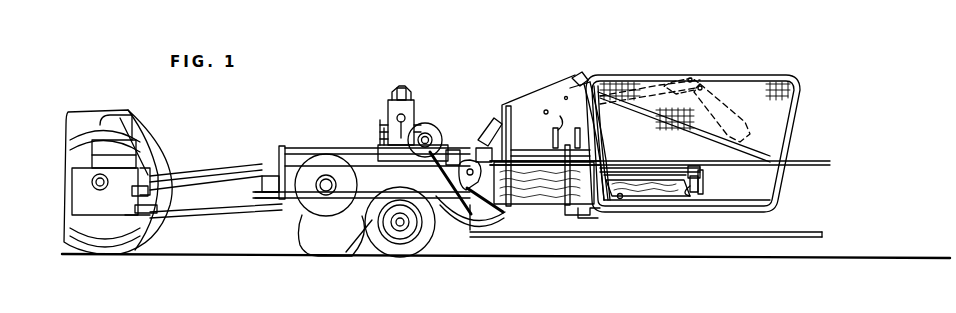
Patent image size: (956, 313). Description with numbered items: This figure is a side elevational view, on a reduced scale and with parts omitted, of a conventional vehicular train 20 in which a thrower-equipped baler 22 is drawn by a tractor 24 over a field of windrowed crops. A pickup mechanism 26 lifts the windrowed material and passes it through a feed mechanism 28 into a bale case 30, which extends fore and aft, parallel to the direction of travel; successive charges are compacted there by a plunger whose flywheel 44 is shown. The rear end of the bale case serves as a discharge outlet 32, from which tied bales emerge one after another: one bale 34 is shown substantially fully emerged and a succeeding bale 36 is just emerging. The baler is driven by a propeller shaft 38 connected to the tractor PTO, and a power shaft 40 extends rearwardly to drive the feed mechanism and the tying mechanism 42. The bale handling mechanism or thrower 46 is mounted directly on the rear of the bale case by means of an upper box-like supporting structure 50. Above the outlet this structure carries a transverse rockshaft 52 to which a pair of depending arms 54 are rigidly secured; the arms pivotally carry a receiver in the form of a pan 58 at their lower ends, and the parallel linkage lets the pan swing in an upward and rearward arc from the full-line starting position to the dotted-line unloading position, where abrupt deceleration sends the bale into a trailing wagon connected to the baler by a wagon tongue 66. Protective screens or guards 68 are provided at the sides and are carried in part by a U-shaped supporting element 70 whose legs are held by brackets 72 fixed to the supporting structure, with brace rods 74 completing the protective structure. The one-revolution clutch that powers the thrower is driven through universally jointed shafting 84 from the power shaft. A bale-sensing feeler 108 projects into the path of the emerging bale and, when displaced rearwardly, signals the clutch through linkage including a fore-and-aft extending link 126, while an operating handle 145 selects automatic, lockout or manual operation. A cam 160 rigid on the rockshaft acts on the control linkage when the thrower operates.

The frame 20 is at (268, 164).
The ground wheel 22 is at (401, 248).
The tractor 24 is at (122, 212).
The pickup mechanism 26 is at (322, 248).
The feed mechanism 28 is at (402, 92).
The bale case 30 is at (365, 172).
The discharge outlet 32 is at (548, 193).
The bale 34 is at (670, 190).
The succeeding bale 36 is at (569, 206).
The propeller shaft 38 is at (202, 188).
The power shaft 40 is at (305, 148).
The tying mechanism 42 is at (430, 127).
The flywheel 44 is at (308, 200).
The bale handling mechanism or thrower 46 is at (637, 58).
The upper box-like supporting structure 50 is at (523, 102).
The transverse rockshaft 52 is at (586, 78).
The depending arms 54 is at (606, 146).
The pan 58 is at (668, 206).
The trailer or wagon tongue 66 is at (786, 230).
The protective screens or guards 68 is at (770, 78).
The U-shaped supporting element 70 is at (810, 158).
The brackets 72 is at (511, 143).
The brace rods 74 is at (752, 152).
The universally jointed shafting 84 is at (486, 140).
The bale-sensing member or feeler 108 is at (702, 184).
The fore-and-aft extending link 126 is at (656, 152).
The operating handle 145 is at (555, 125).
The cam 160 is at (577, 75).